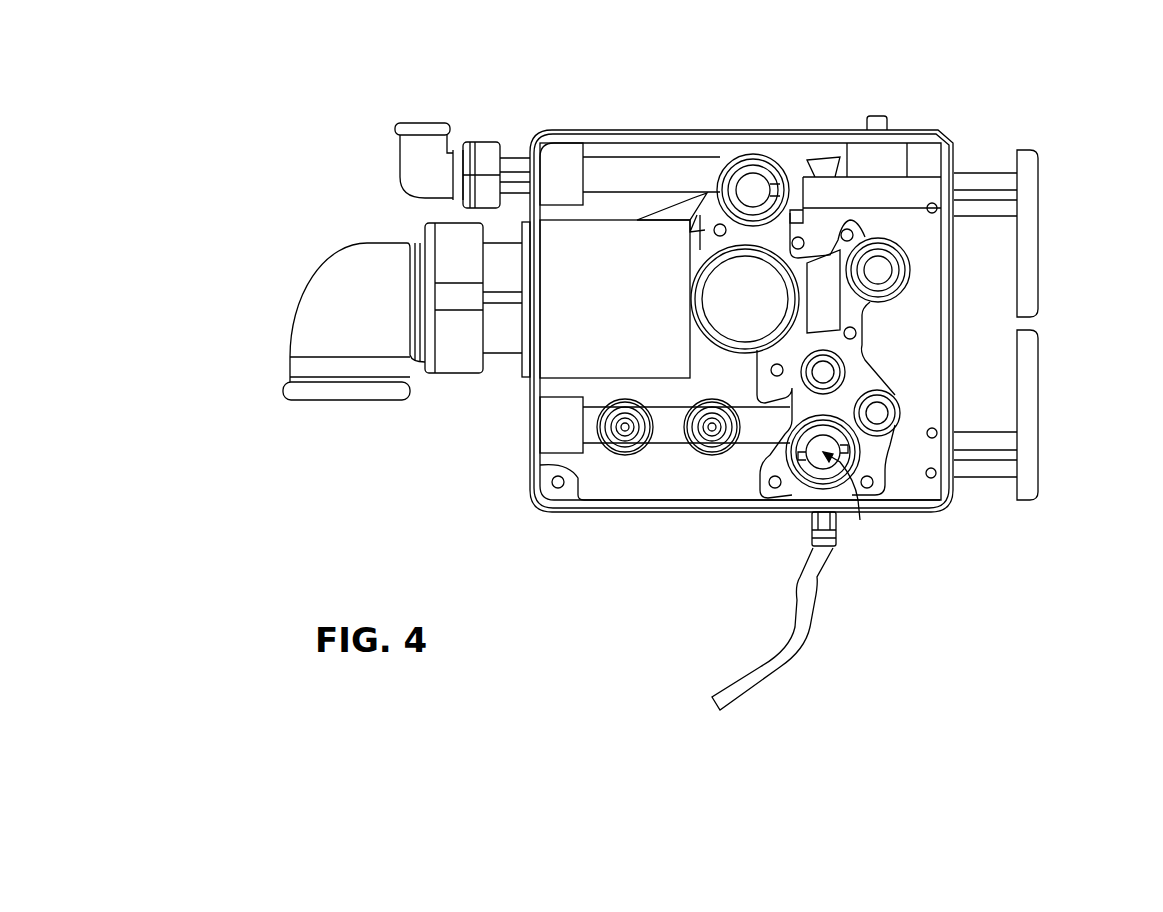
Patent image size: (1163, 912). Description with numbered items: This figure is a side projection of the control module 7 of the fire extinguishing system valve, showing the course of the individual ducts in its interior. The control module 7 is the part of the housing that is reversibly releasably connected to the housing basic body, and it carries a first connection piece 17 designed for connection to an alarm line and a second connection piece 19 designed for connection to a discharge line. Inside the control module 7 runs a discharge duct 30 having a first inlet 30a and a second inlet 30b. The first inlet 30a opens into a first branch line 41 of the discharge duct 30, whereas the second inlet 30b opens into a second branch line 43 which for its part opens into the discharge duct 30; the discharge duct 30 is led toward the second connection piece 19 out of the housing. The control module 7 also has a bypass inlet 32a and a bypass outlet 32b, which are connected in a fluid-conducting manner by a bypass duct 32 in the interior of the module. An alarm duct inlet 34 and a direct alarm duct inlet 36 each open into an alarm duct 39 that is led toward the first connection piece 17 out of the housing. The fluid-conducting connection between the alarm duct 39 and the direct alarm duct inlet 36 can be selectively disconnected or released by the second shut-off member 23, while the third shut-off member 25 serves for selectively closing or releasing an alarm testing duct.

The control module 7 is at (592, 131).
The first connection piece 17 is at (395, 143).
The second connection piece 19 is at (318, 315).
The second shut-off member 23 is at (1027, 487).
The third shut-off member 25 is at (1027, 188).
The discharge duct 30 is at (508, 296).
The first inlet 30a is at (741, 312).
The second inlet 30b is at (756, 186).
The bypass duct 32 is at (895, 345).
The bypass inlet 32a is at (880, 415).
The bypass outlet 32b is at (876, 267).
The alarm duct inlet 34 is at (821, 372).
The direct alarm duct inlet 36 is at (860, 520).
The alarm duct 39 is at (657, 175).
The first branch line 41 is at (695, 338).
The second branch line 43 is at (708, 215).